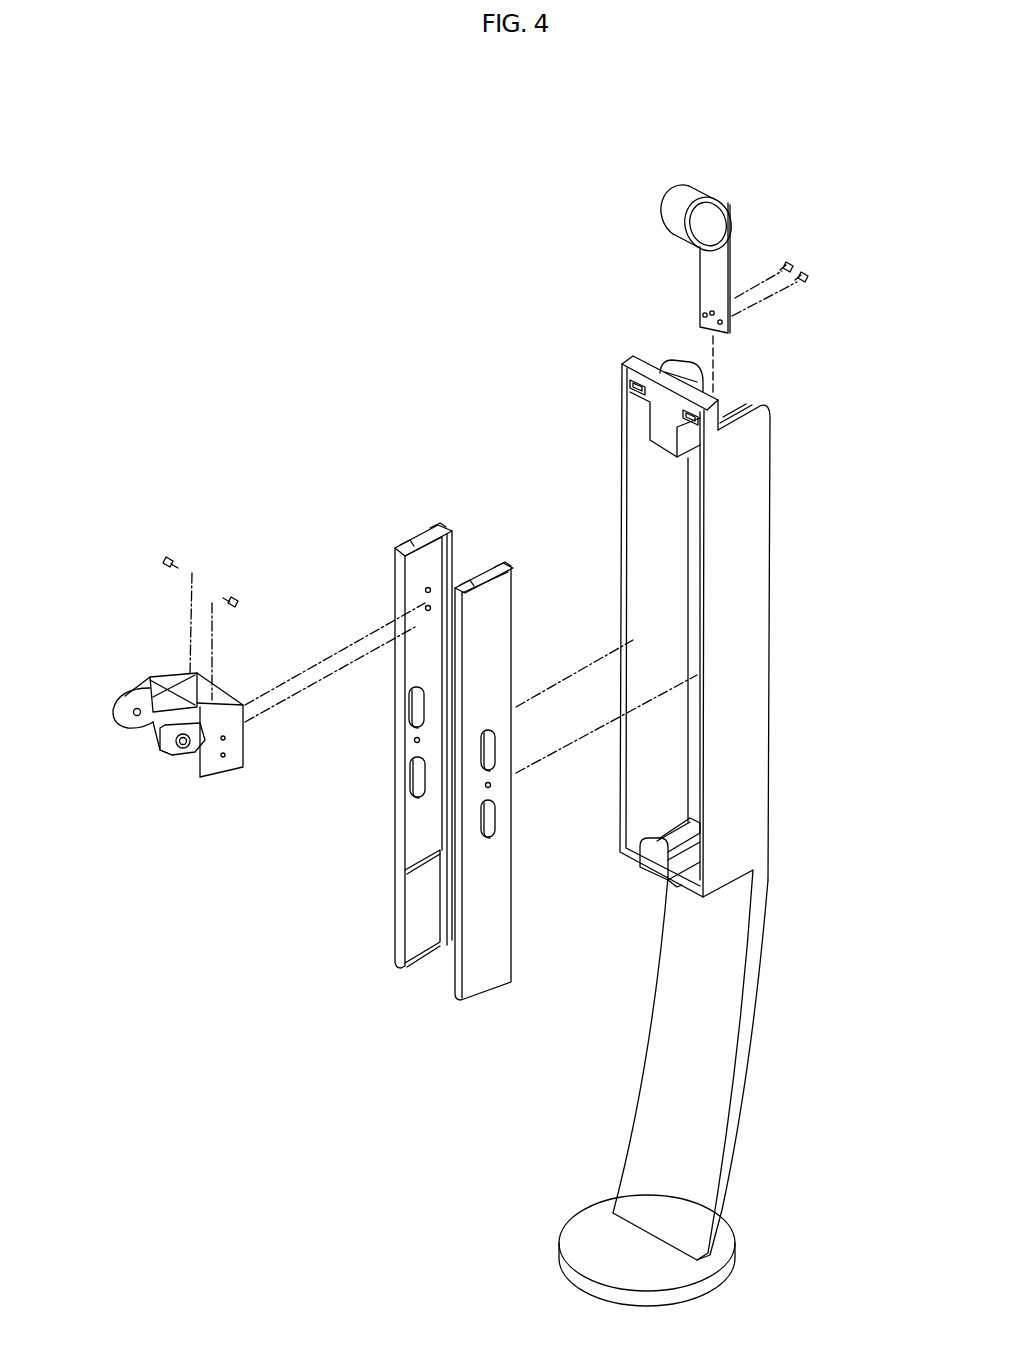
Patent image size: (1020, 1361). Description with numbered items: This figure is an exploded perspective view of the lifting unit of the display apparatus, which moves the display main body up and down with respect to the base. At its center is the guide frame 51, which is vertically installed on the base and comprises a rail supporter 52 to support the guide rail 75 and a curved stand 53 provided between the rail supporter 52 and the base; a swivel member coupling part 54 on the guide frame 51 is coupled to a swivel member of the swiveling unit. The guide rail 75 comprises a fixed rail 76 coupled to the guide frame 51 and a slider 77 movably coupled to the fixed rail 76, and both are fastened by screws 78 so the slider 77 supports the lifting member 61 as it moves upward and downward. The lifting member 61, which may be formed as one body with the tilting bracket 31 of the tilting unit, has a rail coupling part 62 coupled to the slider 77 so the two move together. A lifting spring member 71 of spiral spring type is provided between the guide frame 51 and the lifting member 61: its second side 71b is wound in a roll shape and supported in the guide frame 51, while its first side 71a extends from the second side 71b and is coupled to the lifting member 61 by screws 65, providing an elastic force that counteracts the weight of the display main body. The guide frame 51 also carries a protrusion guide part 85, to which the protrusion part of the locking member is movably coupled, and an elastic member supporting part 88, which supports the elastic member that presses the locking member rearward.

The tilting bracket 31 is at (130, 730).
The guide frame 51 is at (845, 737).
The rail supporter 52 is at (677, 737).
The curved stand 53 is at (724, 1030).
The swivel member coupling part 54 is at (735, 1243).
The lifting member 61 is at (227, 710).
The rail coupling part 62 is at (207, 743).
The screw 65 is at (803, 274).
The lifting spring member 71 is at (560, 226).
The first side of the lifting spring member 71a is at (700, 292).
The second side of the lifting spring member 71b is at (658, 222).
The guide rail 75 is at (328, 673).
The fixed rail 76 is at (458, 840).
The slider 77 is at (412, 641).
The screw 78 is at (232, 599).
The protrusion guide part 85 is at (670, 840).
The elastic member supporting part 88 is at (642, 858).